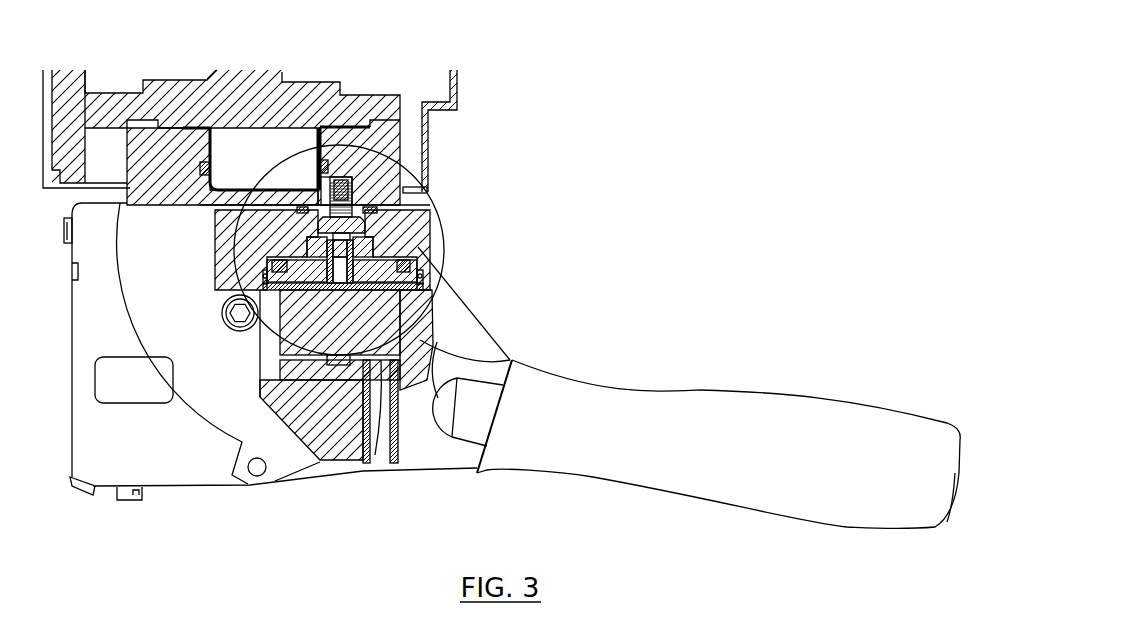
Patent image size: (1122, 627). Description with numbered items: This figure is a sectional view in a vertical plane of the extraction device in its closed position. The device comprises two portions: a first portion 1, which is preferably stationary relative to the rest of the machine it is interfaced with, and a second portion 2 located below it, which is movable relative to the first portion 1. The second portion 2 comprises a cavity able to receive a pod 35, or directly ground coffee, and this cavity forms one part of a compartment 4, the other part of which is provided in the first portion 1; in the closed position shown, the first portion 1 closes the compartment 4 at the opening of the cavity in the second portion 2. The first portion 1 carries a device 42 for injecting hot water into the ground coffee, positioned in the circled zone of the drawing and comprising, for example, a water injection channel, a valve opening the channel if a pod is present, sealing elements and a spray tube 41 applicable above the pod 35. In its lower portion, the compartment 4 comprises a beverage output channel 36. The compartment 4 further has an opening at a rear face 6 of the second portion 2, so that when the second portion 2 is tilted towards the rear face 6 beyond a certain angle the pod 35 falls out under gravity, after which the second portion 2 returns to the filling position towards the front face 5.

The first portion 1 is at (417, 248).
The second portion 2 is at (512, 359).
The compartment 4 is at (390, 457).
The front face 5 is at (427, 312).
The rear face 6 is at (262, 362).
The pod 35 is at (315, 318).
The beverage output channel 36 is at (380, 450).
The spray tube 41 is at (413, 290).
The device for injecting hot water 42 is at (367, 231).